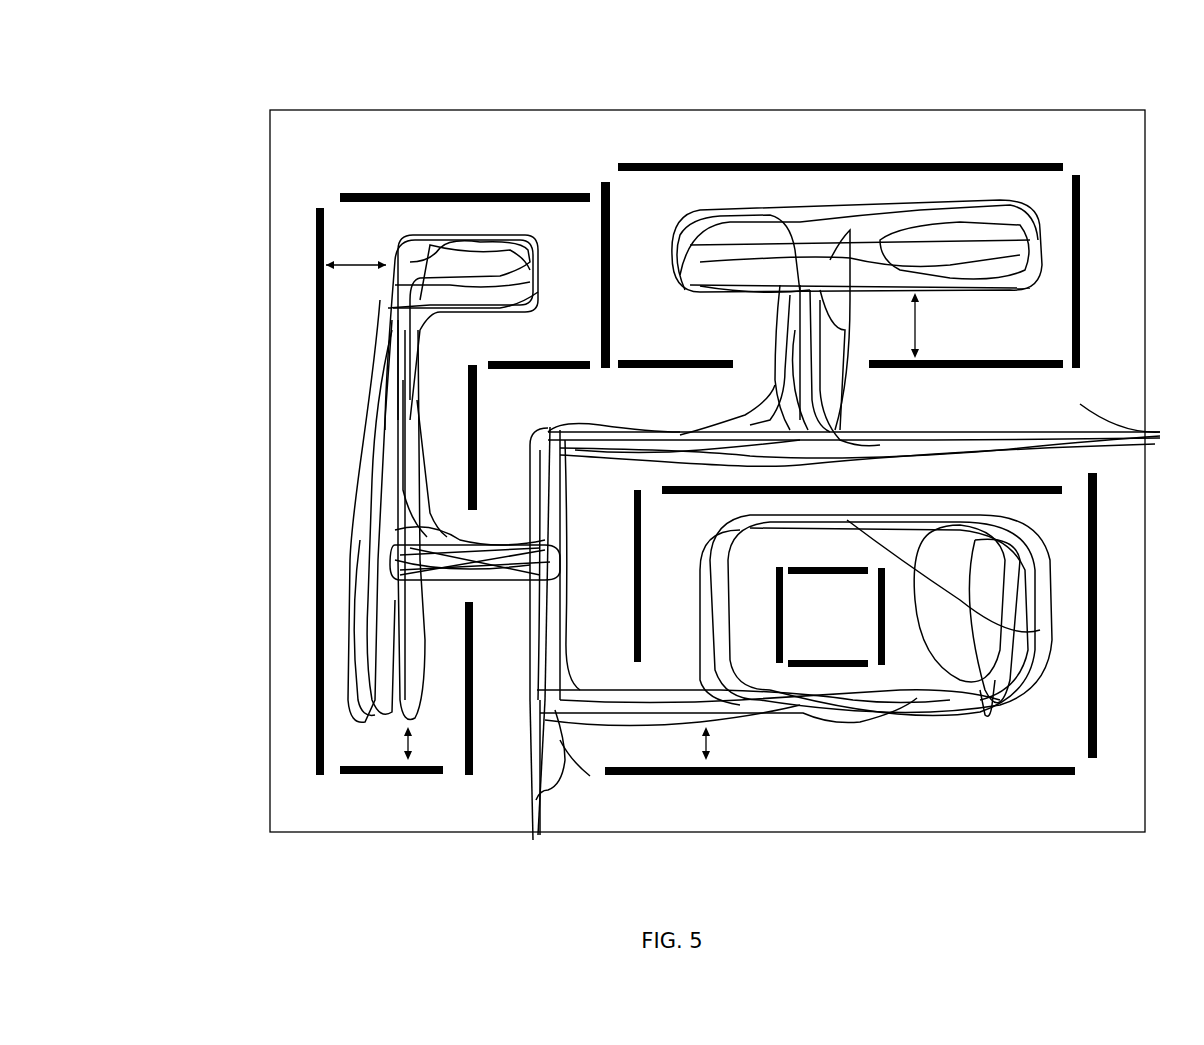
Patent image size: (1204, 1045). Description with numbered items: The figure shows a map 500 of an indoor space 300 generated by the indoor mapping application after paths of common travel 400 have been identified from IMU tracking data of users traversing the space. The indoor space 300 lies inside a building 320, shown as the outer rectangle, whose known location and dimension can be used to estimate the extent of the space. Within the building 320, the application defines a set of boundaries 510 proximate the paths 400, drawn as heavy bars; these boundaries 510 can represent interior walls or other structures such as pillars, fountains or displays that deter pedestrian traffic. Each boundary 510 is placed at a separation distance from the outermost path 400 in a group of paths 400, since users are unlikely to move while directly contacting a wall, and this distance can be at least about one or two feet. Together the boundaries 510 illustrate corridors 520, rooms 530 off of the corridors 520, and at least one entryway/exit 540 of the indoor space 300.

The map 500 is at (250, 92).
The building 320 is at (818, 110).
The boundaries 510 is at (383, 183).
The corridors 520 is at (480, 691).
The rooms 530 is at (526, 348).
The indoor space 300 is at (489, 420).
The path of common travel 400 is at (703, 298).
The entryway/exit 540 is at (1082, 402).